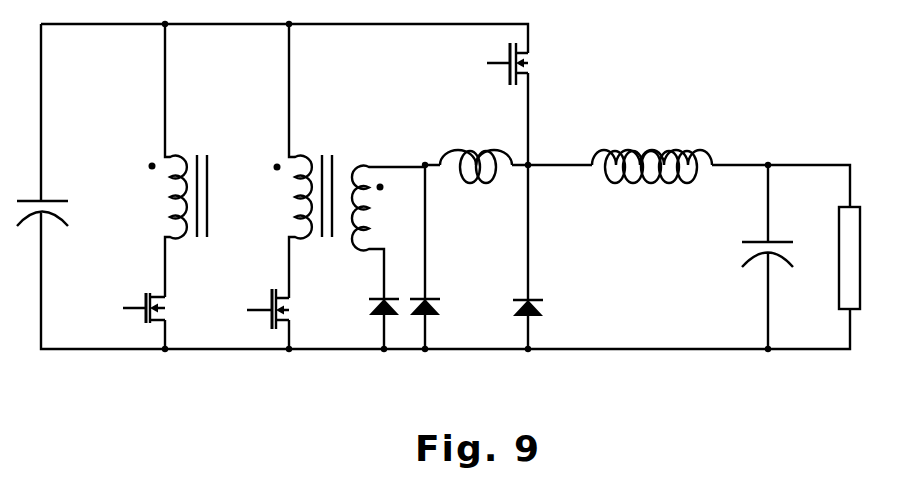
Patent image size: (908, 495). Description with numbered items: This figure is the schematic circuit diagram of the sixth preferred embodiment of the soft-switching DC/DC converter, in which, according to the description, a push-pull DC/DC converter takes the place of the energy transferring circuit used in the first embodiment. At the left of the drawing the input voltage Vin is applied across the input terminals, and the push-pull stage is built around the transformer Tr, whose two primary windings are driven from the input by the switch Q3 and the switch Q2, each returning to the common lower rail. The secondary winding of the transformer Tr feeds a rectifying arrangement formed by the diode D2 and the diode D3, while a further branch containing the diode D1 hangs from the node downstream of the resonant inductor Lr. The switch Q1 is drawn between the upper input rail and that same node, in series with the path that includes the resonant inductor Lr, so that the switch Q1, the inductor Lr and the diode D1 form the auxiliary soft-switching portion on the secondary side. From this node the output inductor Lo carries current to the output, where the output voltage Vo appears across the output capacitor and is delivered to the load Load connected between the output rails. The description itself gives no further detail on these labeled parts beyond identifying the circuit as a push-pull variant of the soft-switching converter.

The input voltage source / capacitor Vin is at (48, 197).
The transformer Tr is at (287, 161).
The switch Q1 is at (491, 104).
The switch Q2 is at (254, 319).
The switch Q3 is at (132, 321).
The diode D1 is at (512, 257).
The diode D2 is at (368, 324).
The diode D3 is at (433, 257).
The resonant inductor Lr is at (476, 153).
The output inductor Lo is at (652, 153).
The output voltage / output capacitor Vo is at (748, 257).
The load Load is at (845, 290).